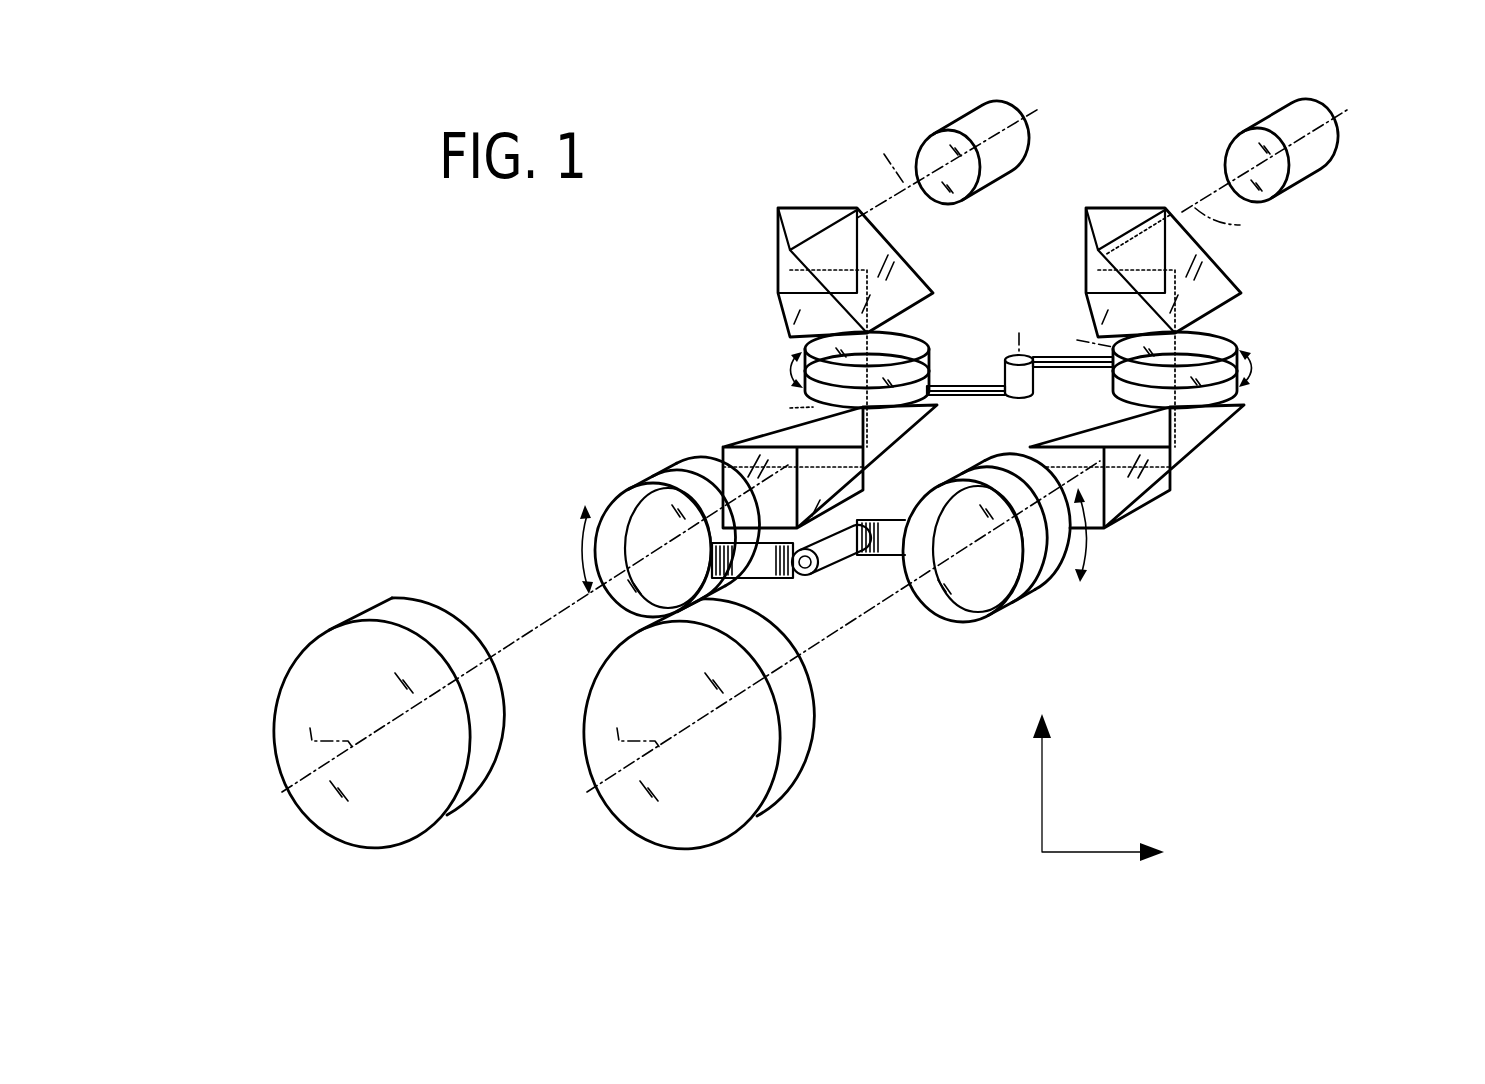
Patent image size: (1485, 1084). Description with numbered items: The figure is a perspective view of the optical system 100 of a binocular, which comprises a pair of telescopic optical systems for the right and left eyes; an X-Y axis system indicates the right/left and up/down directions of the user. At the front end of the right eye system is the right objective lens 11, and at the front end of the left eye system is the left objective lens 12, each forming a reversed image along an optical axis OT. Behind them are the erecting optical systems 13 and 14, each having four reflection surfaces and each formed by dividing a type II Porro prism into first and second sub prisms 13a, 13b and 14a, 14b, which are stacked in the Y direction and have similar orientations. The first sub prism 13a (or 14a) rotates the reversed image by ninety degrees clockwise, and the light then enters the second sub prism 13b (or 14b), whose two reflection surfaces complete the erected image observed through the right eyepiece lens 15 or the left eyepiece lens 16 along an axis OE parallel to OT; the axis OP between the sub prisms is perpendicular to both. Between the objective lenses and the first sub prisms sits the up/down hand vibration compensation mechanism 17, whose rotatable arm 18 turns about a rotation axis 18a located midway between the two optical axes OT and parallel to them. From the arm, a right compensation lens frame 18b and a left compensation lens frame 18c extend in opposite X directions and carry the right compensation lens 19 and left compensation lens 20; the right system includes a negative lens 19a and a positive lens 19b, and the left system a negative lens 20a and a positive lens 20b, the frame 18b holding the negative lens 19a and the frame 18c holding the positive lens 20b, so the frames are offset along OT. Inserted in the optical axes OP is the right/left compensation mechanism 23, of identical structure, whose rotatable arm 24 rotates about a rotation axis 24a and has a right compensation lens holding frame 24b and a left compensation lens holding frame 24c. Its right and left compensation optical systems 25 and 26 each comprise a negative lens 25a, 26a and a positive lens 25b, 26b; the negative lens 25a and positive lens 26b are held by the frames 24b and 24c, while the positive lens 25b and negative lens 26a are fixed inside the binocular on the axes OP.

The optical system 100 is at (483, 363).
The right objective lens 11 is at (327, 797).
The left objective lens 12 is at (636, 797).
The erecting optical system 13 is at (684, 265).
The first sub prism 13a is at (735, 455).
The second sub prism 13b is at (790, 296).
The erecting optical system 14 is at (1349, 288).
The first sub prism 14a is at (1246, 405).
The second sub prism 14b is at (1238, 285).
The right eyepiece lens 15 is at (968, 118).
The left eyepiece lens 16 is at (1278, 116).
The up/down hand vibration compensation mechanism 17 is at (888, 686).
The rotatable arm 18 is at (845, 612).
The rotation axis 18a is at (805, 576).
The right compensation lens frame 18b is at (772, 572).
The left compensation lens frame 18c is at (860, 540).
The right compensation lens 19 is at (599, 380).
The negative lens 19a is at (662, 484).
The positive lens 19b is at (695, 462).
The left compensation lens 20 is at (1154, 590).
The negative lens 20a is at (1040, 592).
The positive lens 20b is at (1062, 577).
The right/left compensation mechanism 23 is at (982, 359).
The rotatable arm 24 is at (983, 437).
The rotation axis 24a is at (1010, 392).
The right compensation lens holding frame 24b is at (953, 400).
The left compensation lens holding frame 24c is at (1068, 368).
The right compensation optical system 25 is at (991, 222).
The negative lens 25a is at (897, 374).
The positive lens 25b is at (893, 335).
The left compensation optical system 26 is at (1287, 450).
The negative lens 26a is at (1192, 432).
The positive lens 26b is at (1198, 408).